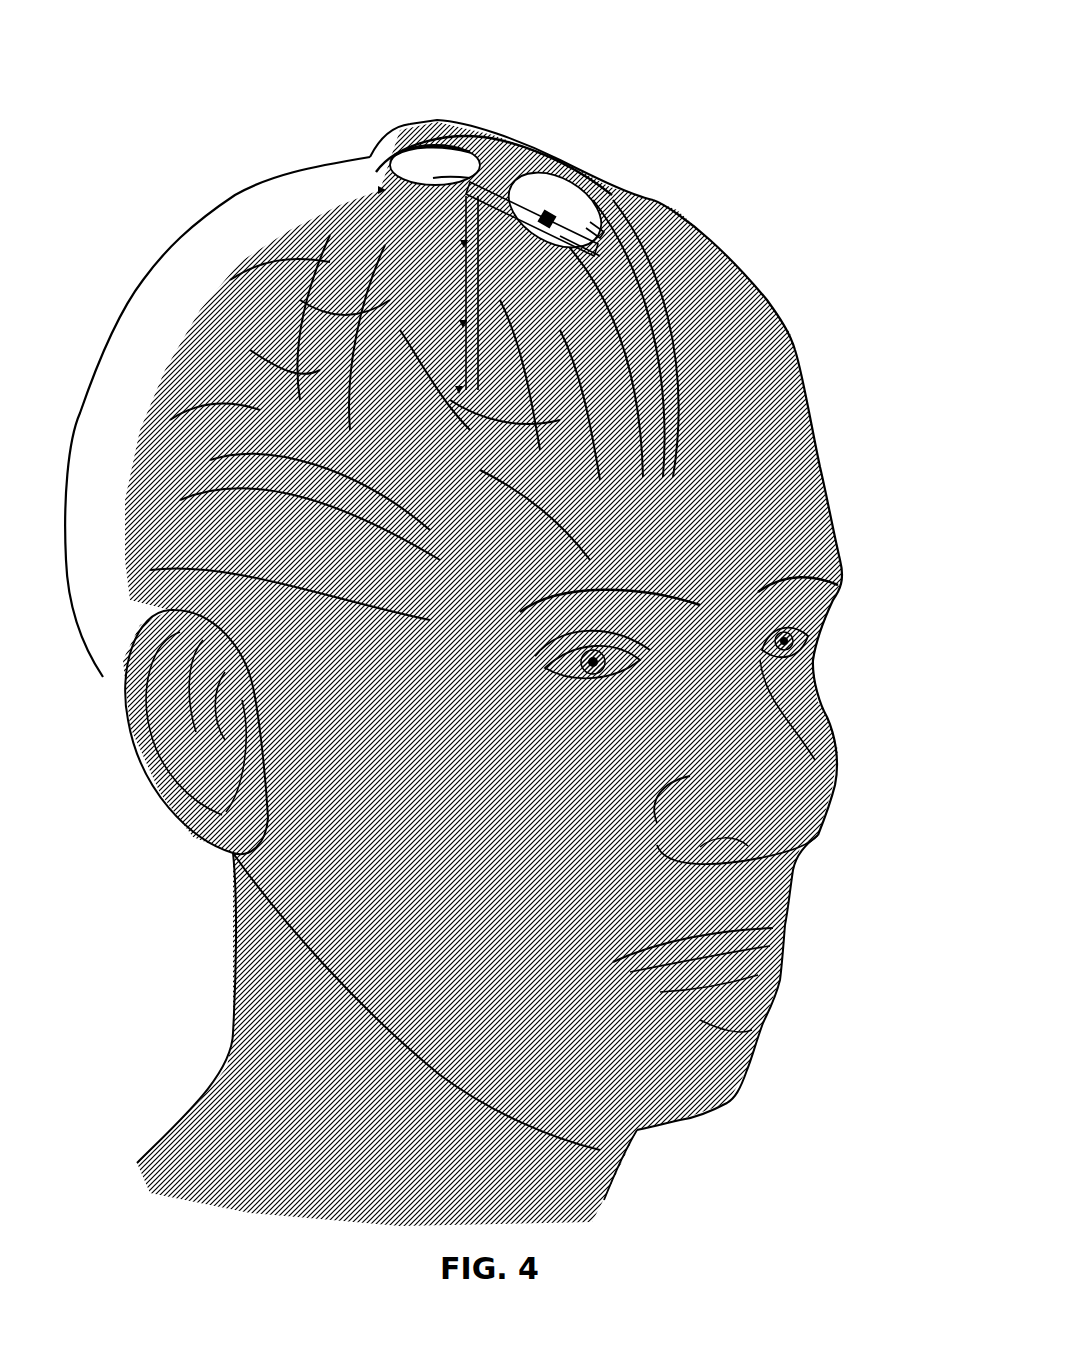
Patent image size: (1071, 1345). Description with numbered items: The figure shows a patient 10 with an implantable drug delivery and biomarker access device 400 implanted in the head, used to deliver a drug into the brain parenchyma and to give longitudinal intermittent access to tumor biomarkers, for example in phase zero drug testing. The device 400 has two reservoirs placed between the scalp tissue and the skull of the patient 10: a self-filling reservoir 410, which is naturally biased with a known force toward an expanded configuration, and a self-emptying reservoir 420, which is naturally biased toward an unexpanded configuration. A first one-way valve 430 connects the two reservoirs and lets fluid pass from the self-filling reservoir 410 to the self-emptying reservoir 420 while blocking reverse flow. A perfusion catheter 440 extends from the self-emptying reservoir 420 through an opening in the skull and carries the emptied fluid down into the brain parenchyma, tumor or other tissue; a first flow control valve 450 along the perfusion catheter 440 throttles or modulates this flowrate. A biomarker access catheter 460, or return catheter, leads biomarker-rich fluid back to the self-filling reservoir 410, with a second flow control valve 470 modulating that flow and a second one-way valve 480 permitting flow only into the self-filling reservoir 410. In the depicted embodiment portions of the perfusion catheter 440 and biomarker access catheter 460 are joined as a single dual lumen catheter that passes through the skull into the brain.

The patient 10 is at (787, 333).
The implantable drug delivery and biomarker access device 400 is at (531, 201).
The self-filling reservoir 410 is at (576, 210).
The self-emptying reservoir 420 is at (412, 160).
The first one-way valve 430 is at (494, 180).
The perfusion catheter 440 is at (380, 190).
The first flow control valve 450 is at (438, 175).
The biomarker access catheter 460 is at (577, 245).
The second flow control valve 470 is at (569, 205).
The second one-way valve 480 is at (600, 232).